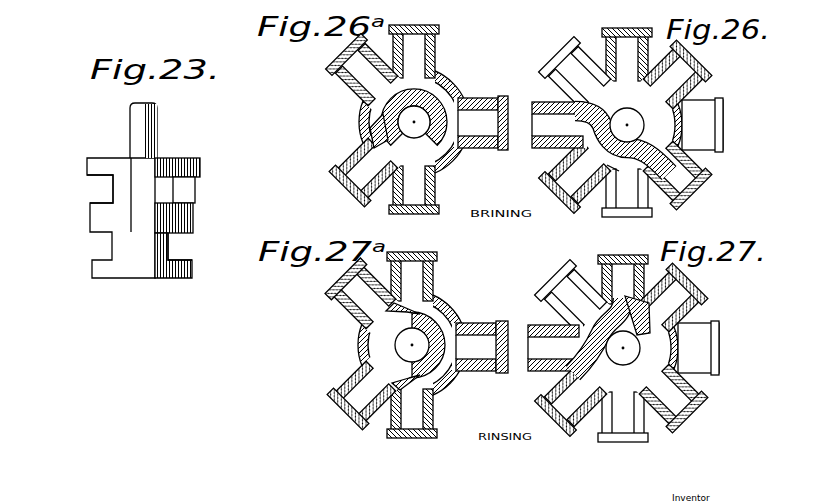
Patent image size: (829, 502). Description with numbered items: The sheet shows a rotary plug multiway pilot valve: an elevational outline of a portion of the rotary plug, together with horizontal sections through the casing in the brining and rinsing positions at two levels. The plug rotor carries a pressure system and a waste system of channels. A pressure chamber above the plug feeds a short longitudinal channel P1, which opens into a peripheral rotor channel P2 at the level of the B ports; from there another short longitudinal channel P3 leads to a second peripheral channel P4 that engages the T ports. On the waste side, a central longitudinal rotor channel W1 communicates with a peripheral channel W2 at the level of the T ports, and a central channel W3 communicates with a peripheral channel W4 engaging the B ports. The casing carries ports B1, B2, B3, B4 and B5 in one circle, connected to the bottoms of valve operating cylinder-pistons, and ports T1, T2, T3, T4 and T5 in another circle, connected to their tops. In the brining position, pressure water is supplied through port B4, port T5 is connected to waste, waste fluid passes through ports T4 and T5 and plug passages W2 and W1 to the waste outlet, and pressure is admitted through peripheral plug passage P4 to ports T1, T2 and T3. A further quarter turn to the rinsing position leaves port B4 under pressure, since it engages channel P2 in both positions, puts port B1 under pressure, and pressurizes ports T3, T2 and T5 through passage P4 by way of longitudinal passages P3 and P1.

In FIG. 23, the short longitudinal channel P1 is at (151, 171).
In FIG. 23, the peripheral rotor channel P2 is at (176, 192).
In FIG. 26, the peripheral rotor channel P2 is at (593, 200).
In FIG. 27, the peripheral rotor channel P2 is at (565, 335).
In FIG. 23, the short longitudinal channel P3 is at (152, 221).
In FIG. 26, the short longitudinal channel P3 is at (590, 144).
In FIG. 27, the short longitudinal channel P3 is at (654, 321).
In FIG. 23, the second peripheral channel P4 is at (100, 249).
In FIG. 26A, the second peripheral channel P4 is at (431, 98).
In FIG. 27A, the second peripheral channel P4 is at (438, 335).
In FIG. 26A, the central longitudinal rotor channel W1 is at (454, 101).
In FIG. 27A, the central longitudinal rotor channel W1 is at (359, 349).
In FIG. 23, the peripheral channel W2 is at (190, 250).
In FIG. 26A, the peripheral channel W2 is at (414, 122).
In FIG. 27A, the peripheral channel W2 is at (376, 345).
In FIG. 26, the central channel W3 is at (626, 114).
In FIG. 27, the central channel W3 is at (617, 361).
In FIG. 23, the peripheral channel W4 is at (100, 191).
In FIG. 26, the peripheral channel W4 is at (631, 125).
In FIG. 27, the peripheral channel W4 is at (627, 348).
In FIG. 26A, the port T1 is at (354, 76).
In FIG. 26, the port T1 is at (572, 74).
In FIG. 27A, the port T1 is at (344, 297).
In FIG. 27, the port T1 is at (566, 299).
In FIG. 26A, the port T2 is at (481, 123).
In FIG. 26, the port T2 is at (723, 125).
In FIG. 27A, the port T2 is at (480, 347).
In FIG. 27, the port T2 is at (720, 348).
In FIG. 26A, the port T3 is at (439, 45).
In FIG. 27A, the port T3 is at (419, 268).
In FIG. 26A, the port T4 is at (352, 169).
In FIG. 27A, the port T4 is at (348, 400).
In FIG. 26A, the port T5 is at (434, 189).
In FIG. 26, the port T5 is at (616, 127).
In FIG. 27A, the port T5 is at (401, 432).
In FIG. 27, the port T5 is at (620, 355).
In FIG. 26, the port B1 is at (631, 47).
In FIG. 27, the port B1 is at (604, 276).
In FIG. 26, the port B2 is at (698, 172).
In FIG. 27, the port B2 is at (682, 404).
In FIG. 26, the port B3 is at (696, 77).
In FIG. 27, the port B3 is at (690, 300).
In FIG. 26, the port B4 is at (557, 125).
In FIG. 27, the port B4 is at (553, 348).
In FIG. 26, the port B5 is at (559, 173).
In FIG. 27, the port B5 is at (561, 396).